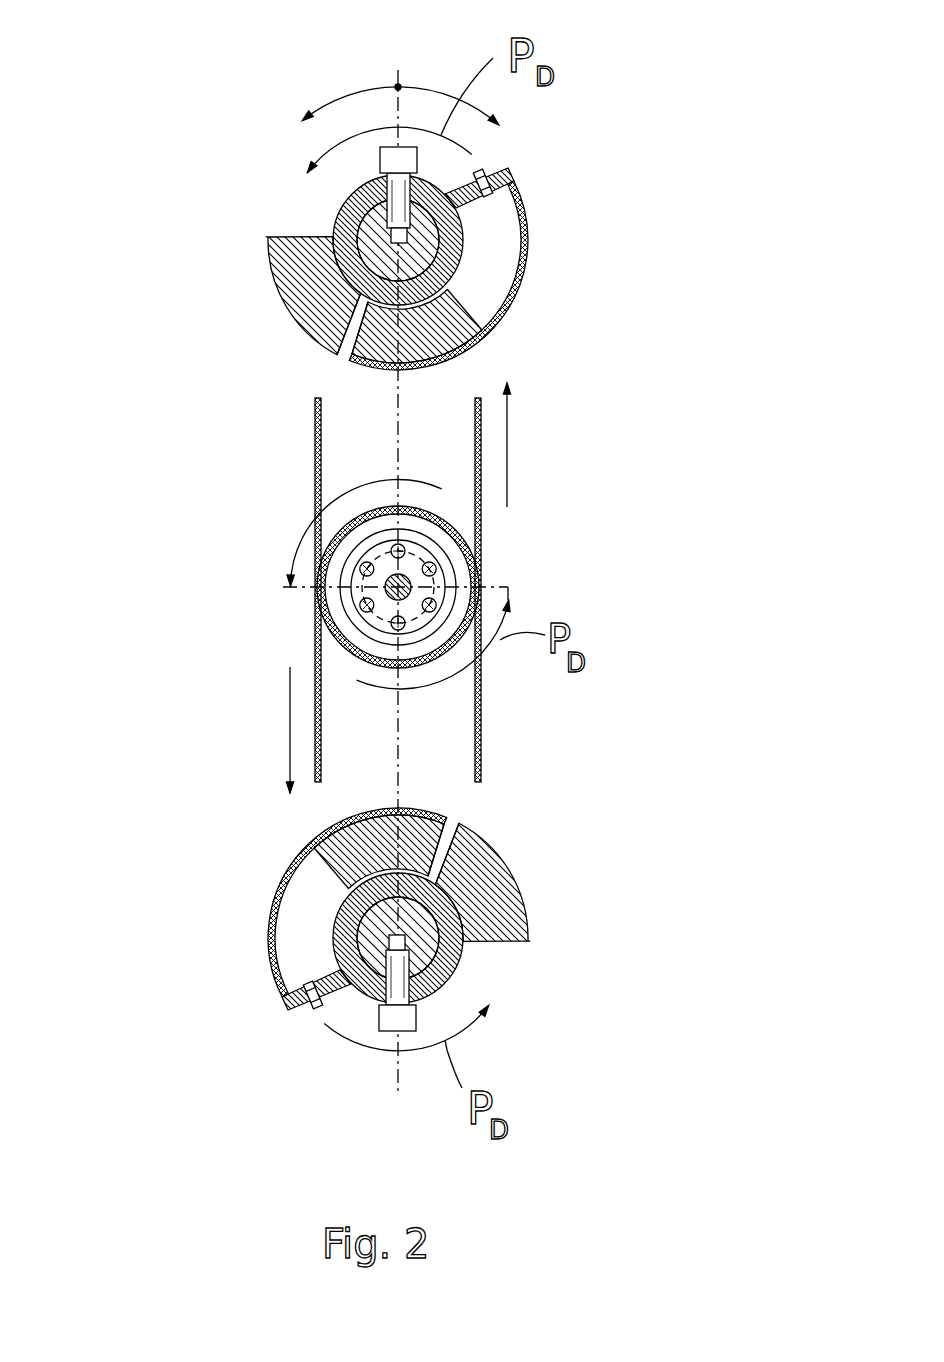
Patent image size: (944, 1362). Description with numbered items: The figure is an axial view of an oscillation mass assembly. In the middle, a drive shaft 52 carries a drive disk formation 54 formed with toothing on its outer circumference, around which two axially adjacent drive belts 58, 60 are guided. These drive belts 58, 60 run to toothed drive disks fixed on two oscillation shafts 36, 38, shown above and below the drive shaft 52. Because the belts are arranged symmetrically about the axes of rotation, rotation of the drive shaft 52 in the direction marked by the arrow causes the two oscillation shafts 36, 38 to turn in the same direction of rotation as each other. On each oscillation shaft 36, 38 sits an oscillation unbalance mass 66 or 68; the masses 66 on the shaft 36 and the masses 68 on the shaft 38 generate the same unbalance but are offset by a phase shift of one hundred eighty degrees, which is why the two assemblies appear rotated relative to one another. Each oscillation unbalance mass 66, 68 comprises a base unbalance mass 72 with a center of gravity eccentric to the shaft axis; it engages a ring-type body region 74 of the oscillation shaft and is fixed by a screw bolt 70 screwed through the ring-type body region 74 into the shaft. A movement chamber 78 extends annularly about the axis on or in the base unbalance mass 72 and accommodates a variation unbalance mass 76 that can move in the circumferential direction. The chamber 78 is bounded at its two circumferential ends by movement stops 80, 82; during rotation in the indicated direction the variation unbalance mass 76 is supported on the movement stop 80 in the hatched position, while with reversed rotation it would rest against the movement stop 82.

The oscillation shaft 36 is at (340, 208).
The oscillation shaft 38 is at (455, 957).
The drive shaft 52 is at (520, 555).
The drive disk formation 54 is at (520, 555).
The drive belt 58 is at (318, 403).
The drive belt 60 is at (480, 715).
The oscillation unbalance mass 66 is at (267, 267).
The oscillation unbalance mass 68 is at (520, 883).
The screw bolt 70 is at (378, 150).
The base unbalance mass 72 is at (311, 284).
The ring-type body region 74 is at (462, 168).
The variation unbalance mass 76 is at (472, 338).
The movement chamber 78 is at (485, 298).
The movement stop 80 is at (330, 350).
The movement stop 82 is at (525, 197).